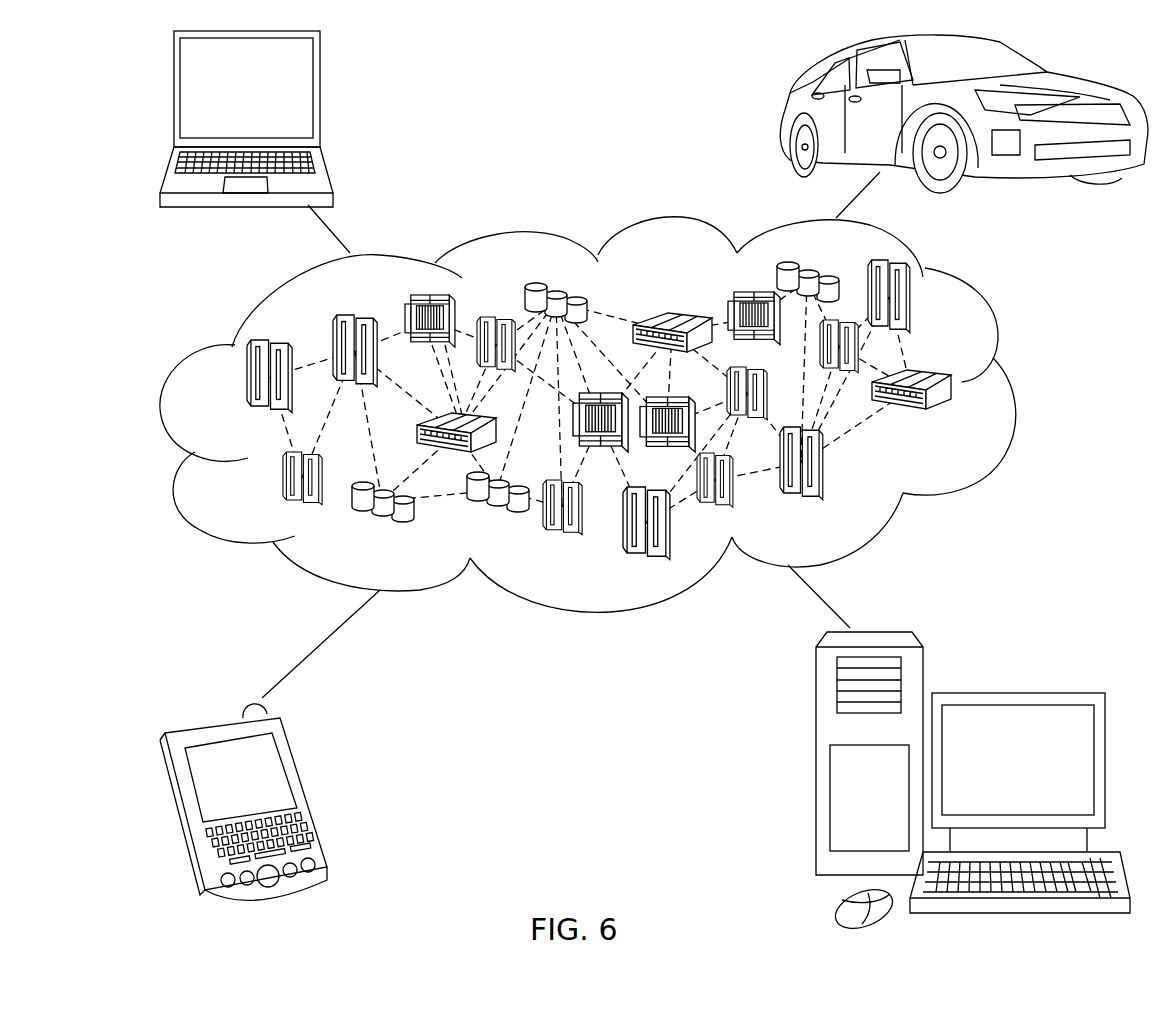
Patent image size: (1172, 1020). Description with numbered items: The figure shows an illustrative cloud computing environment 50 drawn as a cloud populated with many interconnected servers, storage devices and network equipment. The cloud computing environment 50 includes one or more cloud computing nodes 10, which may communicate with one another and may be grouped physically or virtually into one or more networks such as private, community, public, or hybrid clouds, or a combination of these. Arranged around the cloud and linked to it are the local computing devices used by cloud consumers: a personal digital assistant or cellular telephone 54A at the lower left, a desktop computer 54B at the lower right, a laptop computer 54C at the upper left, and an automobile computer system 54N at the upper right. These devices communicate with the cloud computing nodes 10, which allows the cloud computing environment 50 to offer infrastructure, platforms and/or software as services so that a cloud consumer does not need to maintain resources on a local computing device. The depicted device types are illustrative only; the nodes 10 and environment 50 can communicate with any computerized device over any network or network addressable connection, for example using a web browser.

The cloud computing environment 50 is at (616, 415).
The cloud computing node 10 is at (960, 420).
The personal digital assistant or cellular telephone 54A is at (300, 790).
The desktop computer 54B is at (1016, 693).
The laptop computer 54C is at (320, 97).
The automobile computer system 54N is at (782, 113).